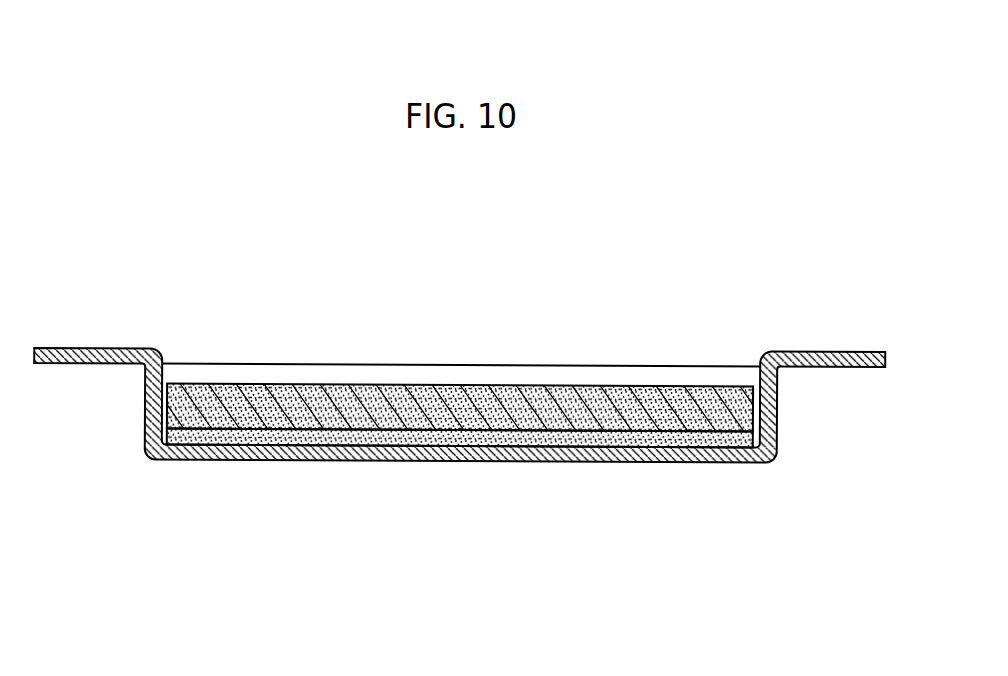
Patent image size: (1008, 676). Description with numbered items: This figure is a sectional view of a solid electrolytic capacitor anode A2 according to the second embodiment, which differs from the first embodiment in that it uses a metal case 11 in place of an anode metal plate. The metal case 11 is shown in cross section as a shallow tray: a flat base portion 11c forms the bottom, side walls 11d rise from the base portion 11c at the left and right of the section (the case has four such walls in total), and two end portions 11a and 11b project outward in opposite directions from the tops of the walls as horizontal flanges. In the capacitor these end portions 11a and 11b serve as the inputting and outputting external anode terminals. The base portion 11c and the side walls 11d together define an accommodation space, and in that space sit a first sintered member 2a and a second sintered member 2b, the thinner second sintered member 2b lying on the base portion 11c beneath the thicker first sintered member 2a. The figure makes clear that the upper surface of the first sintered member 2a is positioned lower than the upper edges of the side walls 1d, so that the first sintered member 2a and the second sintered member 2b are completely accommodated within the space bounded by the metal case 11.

The anode A2 is at (143, 231).
The metal case 11 is at (459, 404).
The end portion 11a is at (92, 350).
The end portion 11b is at (832, 361).
The base portion 11c is at (443, 450).
The side walls 11d is at (150, 406).
The side walls 1d is at (693, 375).
The first sintered member 2a is at (298, 407).
The second sintered member 2b is at (350, 438).